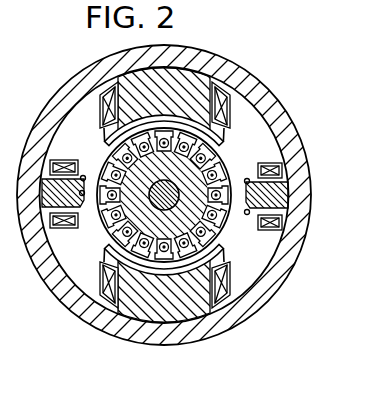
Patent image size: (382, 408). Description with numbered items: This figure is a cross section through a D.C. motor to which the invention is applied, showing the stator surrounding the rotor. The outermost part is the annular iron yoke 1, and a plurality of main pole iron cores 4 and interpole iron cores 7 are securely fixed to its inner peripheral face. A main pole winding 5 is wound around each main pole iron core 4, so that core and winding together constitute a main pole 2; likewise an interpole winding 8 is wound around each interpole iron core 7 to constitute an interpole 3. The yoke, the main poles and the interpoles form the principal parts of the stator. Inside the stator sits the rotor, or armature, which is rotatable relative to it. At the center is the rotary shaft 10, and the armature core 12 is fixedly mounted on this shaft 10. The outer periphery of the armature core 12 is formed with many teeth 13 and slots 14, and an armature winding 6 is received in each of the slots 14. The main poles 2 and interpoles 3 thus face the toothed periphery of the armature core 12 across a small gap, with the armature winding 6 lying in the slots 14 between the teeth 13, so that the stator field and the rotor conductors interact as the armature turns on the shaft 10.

The iron yoke 1 is at (272, 110).
The main pole 2 is at (238, 72).
The interpole 3 is at (289, 192).
The main pole iron core 4 is at (110, 55).
The main pole winding 5 is at (100, 115).
The armature winding 6 is at (245, 216).
The interpole iron core 7 is at (305, 223).
The interpole winding 8 is at (268, 233).
The rotary shaft 10 is at (111, 147).
The armature core 12 is at (107, 233).
The teeth 13 is at (228, 177).
The slots 14 is at (228, 162).